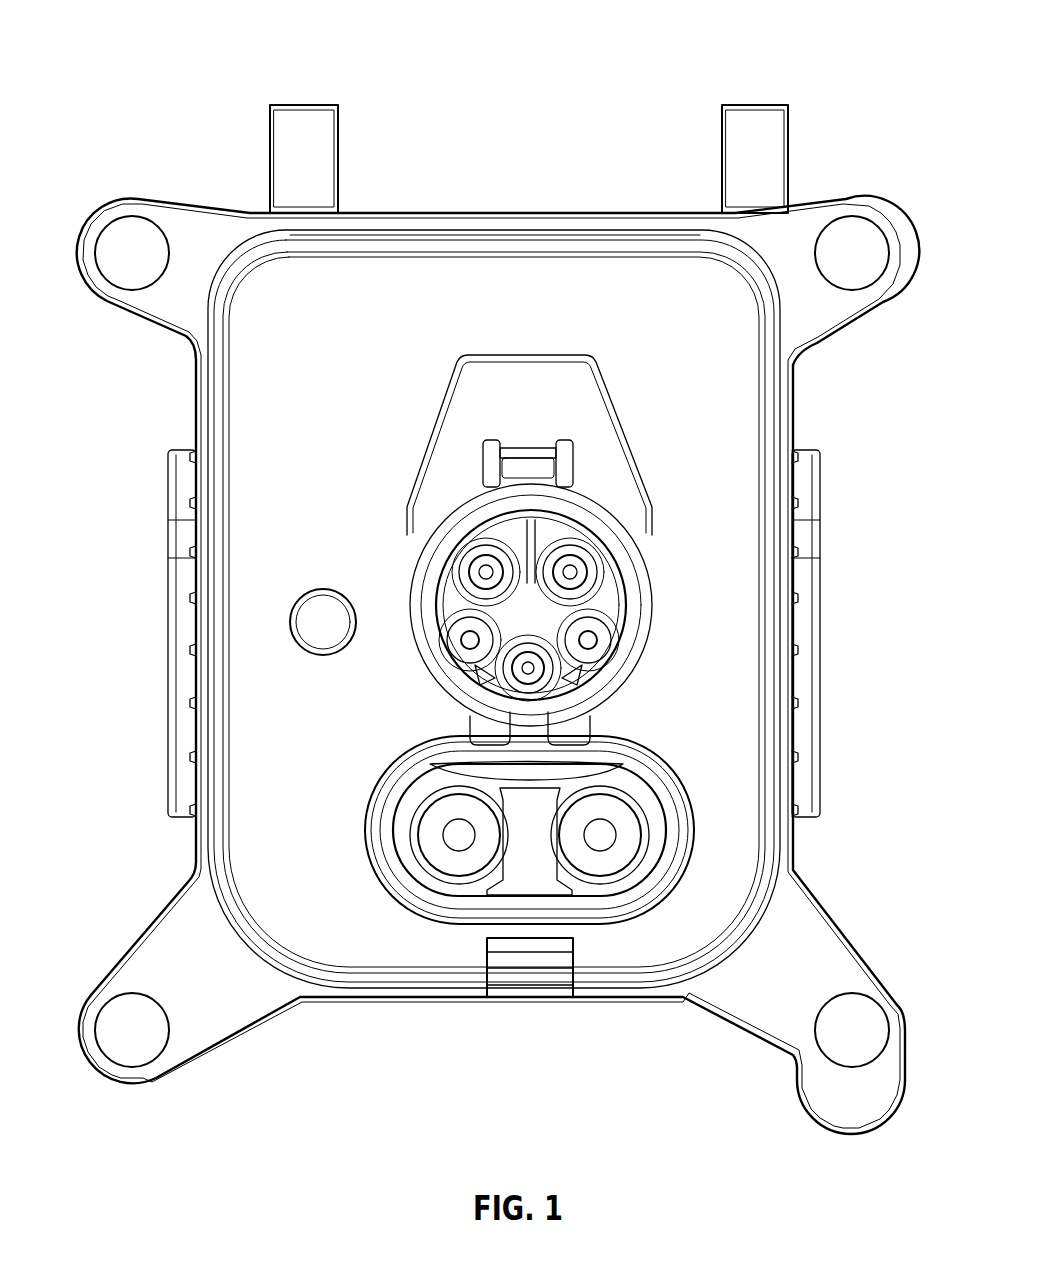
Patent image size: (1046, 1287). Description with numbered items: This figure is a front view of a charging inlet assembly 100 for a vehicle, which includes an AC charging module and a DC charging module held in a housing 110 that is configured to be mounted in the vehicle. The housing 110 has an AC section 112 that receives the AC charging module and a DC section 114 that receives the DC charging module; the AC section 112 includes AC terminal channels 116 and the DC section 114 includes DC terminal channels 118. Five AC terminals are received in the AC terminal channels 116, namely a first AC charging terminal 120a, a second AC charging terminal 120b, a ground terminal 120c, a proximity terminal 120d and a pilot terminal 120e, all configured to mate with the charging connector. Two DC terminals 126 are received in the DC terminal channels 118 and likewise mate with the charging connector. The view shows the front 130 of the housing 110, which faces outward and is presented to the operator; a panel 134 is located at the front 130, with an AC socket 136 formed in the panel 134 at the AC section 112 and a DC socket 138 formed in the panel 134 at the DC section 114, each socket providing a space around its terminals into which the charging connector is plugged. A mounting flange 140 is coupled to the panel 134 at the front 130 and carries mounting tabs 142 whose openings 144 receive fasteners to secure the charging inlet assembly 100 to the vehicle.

The charging inlet assembly 100 is at (188, 72).
The housing 110 is at (725, 652).
The AC section 112 is at (657, 577).
The DC section 114 is at (698, 813).
The AC terminal channels 116 is at (612, 612).
The DC terminal channels 118 is at (642, 807).
The first AC charging terminal 120a is at (490, 562).
The second AC charging terminal 120b is at (578, 560).
The ground terminal 120c is at (540, 694).
The proximity terminal 120d is at (594, 652).
The pilot terminal 120e is at (476, 642).
The DC terminals 126 is at (600, 840).
The front 130 is at (333, 913).
The panel 134 is at (530, 313).
The AC socket 136 is at (607, 533).
The DC socket 138 is at (667, 872).
The mounting flange 140 is at (262, 997).
The mounting tabs 142 is at (180, 1018).
The openings 144 is at (124, 1040).